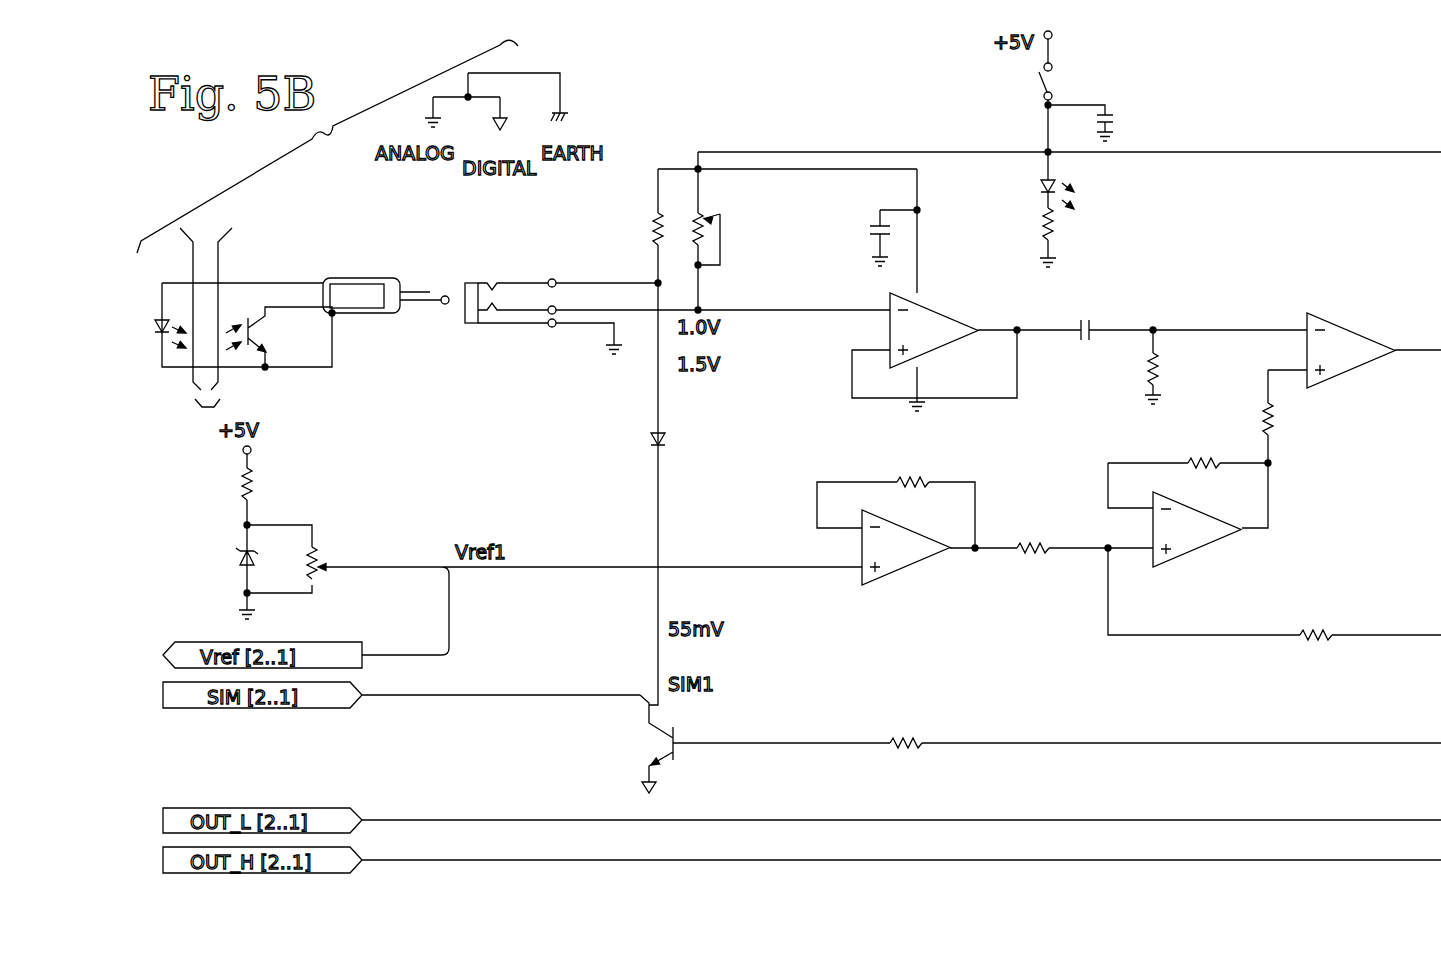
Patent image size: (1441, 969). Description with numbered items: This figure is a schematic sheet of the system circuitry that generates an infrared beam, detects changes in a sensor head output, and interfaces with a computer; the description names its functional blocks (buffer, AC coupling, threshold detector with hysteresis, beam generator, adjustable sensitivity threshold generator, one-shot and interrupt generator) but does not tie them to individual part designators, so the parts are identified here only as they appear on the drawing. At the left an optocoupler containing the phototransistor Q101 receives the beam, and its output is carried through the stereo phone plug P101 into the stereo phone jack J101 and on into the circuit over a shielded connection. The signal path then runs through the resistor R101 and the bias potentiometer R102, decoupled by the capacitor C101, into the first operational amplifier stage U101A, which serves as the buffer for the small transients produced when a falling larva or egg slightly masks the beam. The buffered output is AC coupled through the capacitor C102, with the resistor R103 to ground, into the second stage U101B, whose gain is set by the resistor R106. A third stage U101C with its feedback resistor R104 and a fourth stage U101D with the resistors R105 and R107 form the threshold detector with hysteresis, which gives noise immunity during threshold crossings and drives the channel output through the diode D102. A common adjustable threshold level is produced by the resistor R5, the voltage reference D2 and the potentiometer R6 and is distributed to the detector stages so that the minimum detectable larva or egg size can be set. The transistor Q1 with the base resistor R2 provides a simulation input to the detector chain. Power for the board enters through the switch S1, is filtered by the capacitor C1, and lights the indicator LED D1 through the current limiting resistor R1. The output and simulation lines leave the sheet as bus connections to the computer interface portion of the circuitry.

The optocoupler phototransistor Q101 is at (280, 338).
The .25 stereo phone plug P101 is at (389, 333).
The .25 stereo phone jack J101 is at (541, 317).
The resistor R101 is at (629, 229).
The 5M bias potentiometer R102 is at (737, 245).
The .1uF capacitor C101 is at (865, 236).
The TLC2274 op amp section A U101A is at (936, 290).
The 10uF capacitor C102 is at (1162, 329).
The 10K resistor R103 is at (1182, 367).
The TLC2274 op amp section B U101B is at (1354, 354).
The resistor R106 is at (1138, 495).
The 1K resistor R105 is at (1188, 466).
The TLC2274 op amp section D U101D is at (1202, 549).
The 1M resistor R107 is at (1365, 639).
The TLC2274 op amp section C U101C is at (897, 542).
The 1.6K resistor R104 is at (910, 482).
The 1N914 diode D102 is at (693, 449).
The 2N3904 transistor Q1 is at (765, 744).
The 1K resistor R2 is at (1165, 747).
The 39.2K resistor R5 is at (214, 489).
The LM4041 1.2V voltage reference D2 is at (204, 572).
The 100K potentiometer R6 is at (344, 564).
The power switch S1 is at (1063, 65).
The 33uF capacitor C1 is at (1135, 123).
The red LED D1 is at (1083, 184).
The 2K resistor R1 is at (1033, 229).